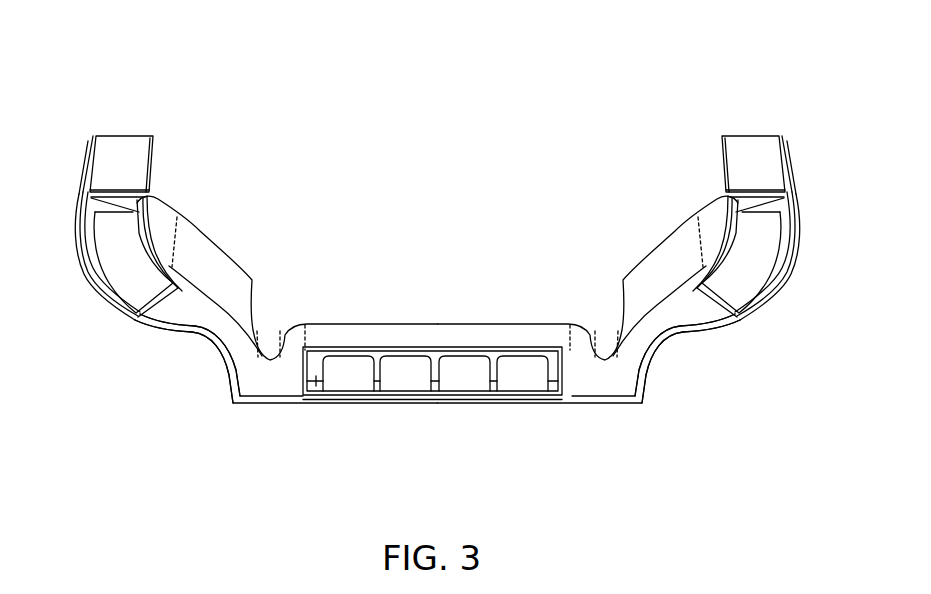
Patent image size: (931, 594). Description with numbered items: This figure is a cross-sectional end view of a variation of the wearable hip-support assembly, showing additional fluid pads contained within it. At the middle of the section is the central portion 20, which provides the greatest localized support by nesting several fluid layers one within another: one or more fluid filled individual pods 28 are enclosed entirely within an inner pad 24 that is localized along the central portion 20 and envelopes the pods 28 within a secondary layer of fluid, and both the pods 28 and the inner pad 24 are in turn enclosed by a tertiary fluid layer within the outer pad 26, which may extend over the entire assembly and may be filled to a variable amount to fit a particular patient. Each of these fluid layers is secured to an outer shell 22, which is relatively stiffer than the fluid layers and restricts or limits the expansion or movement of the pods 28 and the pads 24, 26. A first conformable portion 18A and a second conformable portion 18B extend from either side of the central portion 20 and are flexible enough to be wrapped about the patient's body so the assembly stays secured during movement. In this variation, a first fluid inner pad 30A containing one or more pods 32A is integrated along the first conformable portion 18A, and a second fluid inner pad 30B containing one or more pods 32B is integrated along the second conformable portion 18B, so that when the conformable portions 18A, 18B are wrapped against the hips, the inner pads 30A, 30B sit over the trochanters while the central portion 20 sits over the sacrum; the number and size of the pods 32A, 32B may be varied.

The central portion 20 is at (557, 423).
The first conformable portion 18A is at (149, 340).
The second conformable portion 18B is at (747, 343).
The outer shell 22 is at (85, 196).
The inner pad 24 is at (314, 384).
The outer pad 26 is at (236, 266).
The fluid filled individual pods 28 is at (396, 378).
The first fluid inner pad 30A is at (140, 201).
The second fluid inner pad 30B is at (740, 208).
The pods 32A is at (108, 271).
The pods 32B is at (773, 288).